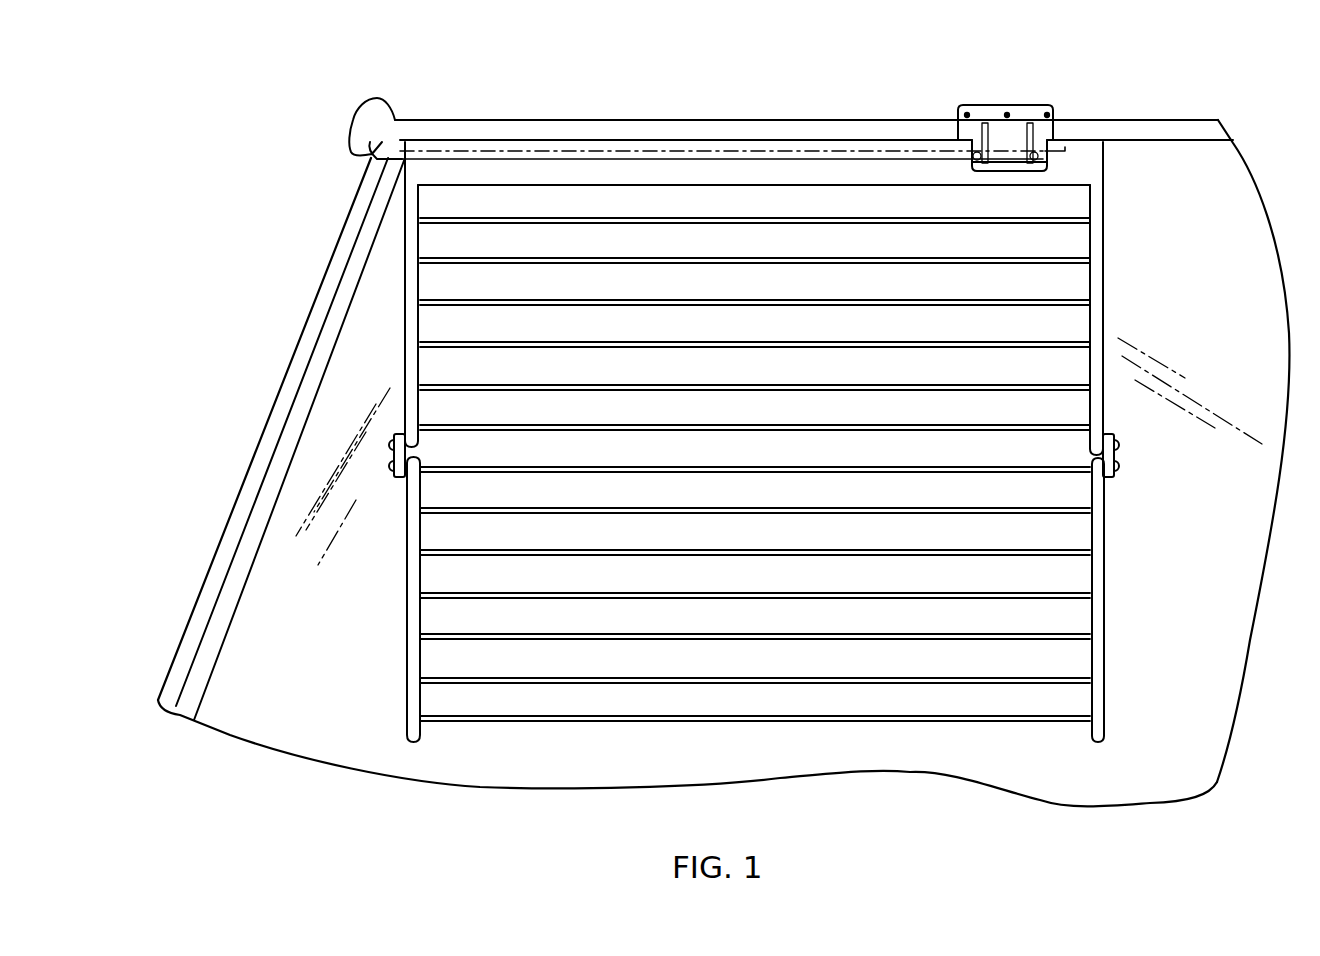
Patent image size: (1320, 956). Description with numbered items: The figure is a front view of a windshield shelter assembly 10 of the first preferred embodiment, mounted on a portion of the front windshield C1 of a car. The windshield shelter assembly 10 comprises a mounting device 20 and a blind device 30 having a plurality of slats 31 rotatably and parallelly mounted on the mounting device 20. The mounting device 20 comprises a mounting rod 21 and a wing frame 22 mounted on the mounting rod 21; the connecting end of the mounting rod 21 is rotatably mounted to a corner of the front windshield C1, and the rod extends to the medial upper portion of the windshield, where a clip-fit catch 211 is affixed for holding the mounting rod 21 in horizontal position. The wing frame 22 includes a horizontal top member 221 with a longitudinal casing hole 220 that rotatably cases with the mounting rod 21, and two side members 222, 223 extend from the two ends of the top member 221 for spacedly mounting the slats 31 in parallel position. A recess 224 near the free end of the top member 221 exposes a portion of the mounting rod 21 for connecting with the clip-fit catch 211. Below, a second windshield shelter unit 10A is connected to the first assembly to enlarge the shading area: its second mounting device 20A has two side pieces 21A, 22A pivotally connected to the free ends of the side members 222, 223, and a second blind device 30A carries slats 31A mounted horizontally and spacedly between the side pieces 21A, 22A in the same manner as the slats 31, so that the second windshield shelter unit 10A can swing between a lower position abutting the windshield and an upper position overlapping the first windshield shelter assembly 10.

The windshield shelter assembly 10 is at (1160, 237).
The second windshield shelter unit 10A is at (1118, 575).
The front windshield C1 is at (1170, 215).
The mounting device 20 is at (791, 96).
The second mounting device 20A is at (384, 668).
The mounting rod 21 is at (393, 155).
The side piece 21A is at (415, 572).
The wing frame 22 is at (700, 442).
The side piece 22A is at (1097, 514).
The longitudinal casing hole 220 is at (752, 150).
The horizontal top member 221 is at (574, 178).
The side member 222 is at (407, 342).
The side member 223 is at (1104, 292).
The recess 224 is at (1036, 132).
The clip-fit catch 211 is at (993, 117).
The blind device 30 is at (754, 420).
The second blind device 30A is at (965, 738).
The slat 31 is at (811, 292).
The slat 31A is at (742, 675).